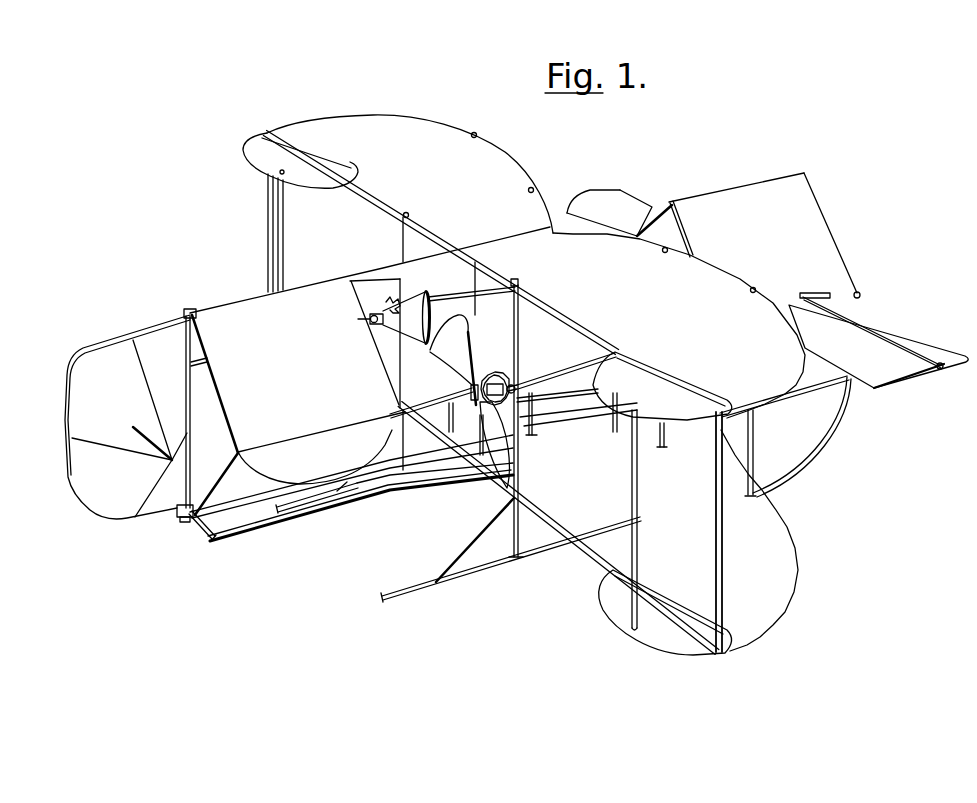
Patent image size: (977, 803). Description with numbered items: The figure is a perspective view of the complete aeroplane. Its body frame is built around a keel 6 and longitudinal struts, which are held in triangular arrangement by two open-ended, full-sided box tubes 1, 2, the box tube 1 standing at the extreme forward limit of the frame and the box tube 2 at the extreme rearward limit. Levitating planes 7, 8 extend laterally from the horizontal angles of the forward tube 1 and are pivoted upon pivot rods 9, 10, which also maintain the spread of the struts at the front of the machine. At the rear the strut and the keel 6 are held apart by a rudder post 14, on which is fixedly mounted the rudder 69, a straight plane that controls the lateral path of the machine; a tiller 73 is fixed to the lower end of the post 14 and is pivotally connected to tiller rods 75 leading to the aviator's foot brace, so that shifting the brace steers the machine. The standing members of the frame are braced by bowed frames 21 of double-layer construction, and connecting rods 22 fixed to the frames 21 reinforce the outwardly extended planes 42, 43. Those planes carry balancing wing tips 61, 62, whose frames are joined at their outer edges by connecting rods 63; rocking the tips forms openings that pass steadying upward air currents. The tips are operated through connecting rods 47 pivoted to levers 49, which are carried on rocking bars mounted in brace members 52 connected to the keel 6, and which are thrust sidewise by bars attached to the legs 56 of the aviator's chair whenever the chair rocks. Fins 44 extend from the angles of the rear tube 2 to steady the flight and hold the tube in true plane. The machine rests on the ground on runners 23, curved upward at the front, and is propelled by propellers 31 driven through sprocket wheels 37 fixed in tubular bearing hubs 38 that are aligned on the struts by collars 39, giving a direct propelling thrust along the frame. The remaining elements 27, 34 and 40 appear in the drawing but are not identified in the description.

The box tube 1 is at (826, 241).
The box tube 2 is at (212, 308).
The keel 6 is at (178, 520).
The levitating plane 7 is at (889, 385).
The levitating plane 8 is at (581, 212).
The pivot rod 9 is at (940, 370).
The pivot rod 10 is at (620, 192).
The rudder post 14 is at (192, 440).
The bowed frame 21 is at (520, 170).
The connecting rod 22 is at (474, 138).
The runner 23 is at (436, 583).
The strut 27 is at (617, 427).
The propeller 31 is at (426, 345).
The pinion 34 is at (507, 376).
The sprocket wheel 37 is at (389, 309).
The tubular bearing hub 38 is at (493, 382).
The collar 39 is at (376, 328).
The upper cross bar 40 is at (430, 296).
The plane 42 is at (456, 132).
The plane 43 is at (780, 533).
The fin 44 is at (321, 448).
The connecting rod 47 is at (805, 387).
The lever 49 is at (533, 428).
The brace member 52 is at (443, 391).
The leg 56 is at (449, 415).
The balancing wing tip 61 is at (255, 163).
The balancing wing tip 62 is at (675, 656).
The connecting rod 63 is at (284, 237).
The rudder 69 is at (68, 431).
The tiller 73 is at (205, 537).
The tiller rod 75 is at (387, 437).